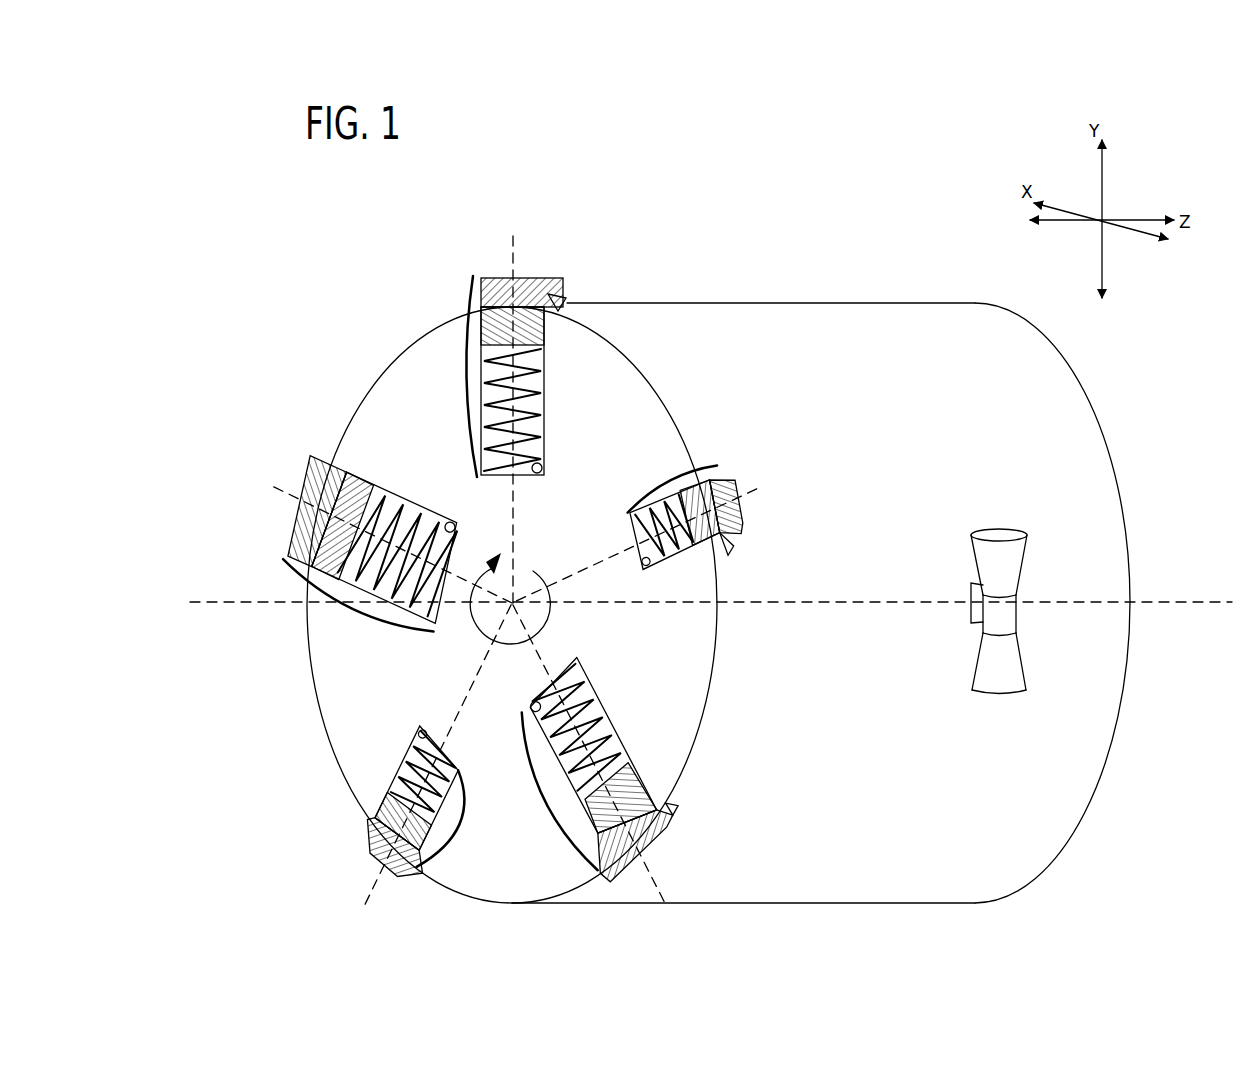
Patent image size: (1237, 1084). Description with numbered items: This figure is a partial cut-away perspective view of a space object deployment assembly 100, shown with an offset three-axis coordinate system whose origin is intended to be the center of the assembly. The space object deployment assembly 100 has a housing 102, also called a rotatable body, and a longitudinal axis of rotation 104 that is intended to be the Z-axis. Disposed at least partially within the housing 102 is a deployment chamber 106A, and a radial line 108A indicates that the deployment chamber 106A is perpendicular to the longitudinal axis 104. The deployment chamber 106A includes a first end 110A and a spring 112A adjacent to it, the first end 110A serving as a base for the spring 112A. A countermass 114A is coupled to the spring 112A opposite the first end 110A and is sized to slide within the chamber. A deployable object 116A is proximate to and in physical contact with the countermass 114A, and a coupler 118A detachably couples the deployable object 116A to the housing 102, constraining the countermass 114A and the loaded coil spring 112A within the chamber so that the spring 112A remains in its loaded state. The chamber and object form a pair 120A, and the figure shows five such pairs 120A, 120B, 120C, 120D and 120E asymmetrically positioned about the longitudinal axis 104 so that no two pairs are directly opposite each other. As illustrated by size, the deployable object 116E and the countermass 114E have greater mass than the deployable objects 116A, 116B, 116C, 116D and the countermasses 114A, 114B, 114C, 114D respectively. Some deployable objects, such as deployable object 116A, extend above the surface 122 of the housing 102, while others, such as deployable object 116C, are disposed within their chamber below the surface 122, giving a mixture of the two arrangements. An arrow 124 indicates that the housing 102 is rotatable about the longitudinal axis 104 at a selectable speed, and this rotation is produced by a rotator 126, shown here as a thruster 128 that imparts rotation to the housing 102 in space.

The space object deployment assembly 100 is at (782, 267).
The housing 102 is at (902, 433).
The longitudinal axis of rotation 104 is at (697, 606).
The deployment chamber 106A is at (493, 409).
The radial line 108A is at (519, 409).
The first end 110A is at (538, 473).
The spring 112A is at (537, 411).
The countermass 114A is at (503, 332).
The countermass 114B is at (700, 552).
The countermass 114C is at (620, 763).
The countermass 114D is at (367, 818).
The countermass 114E is at (347, 468).
The deployable object 116A is at (498, 280).
The deployable object 116B is at (733, 530).
The deployable object 116C is at (660, 837).
The deployable object 116D is at (400, 870).
The deployable object 116E is at (317, 478).
The coupler 118A is at (567, 299).
The pair of deployment chamber and deployable object 120A is at (470, 380).
The pair of deployment chamber and deployable object 120B is at (672, 466).
The pair of deployment chamber and deployable object 120C is at (556, 806).
The pair of deployment chamber and deployable object 120D is at (443, 825).
The pair of deployment chamber and deployable object 120E is at (360, 610).
The surface of the housing 122 is at (826, 303).
The arrow 124 is at (513, 598).
The rotator 126 is at (1003, 553).
The thruster 128 is at (987, 670).